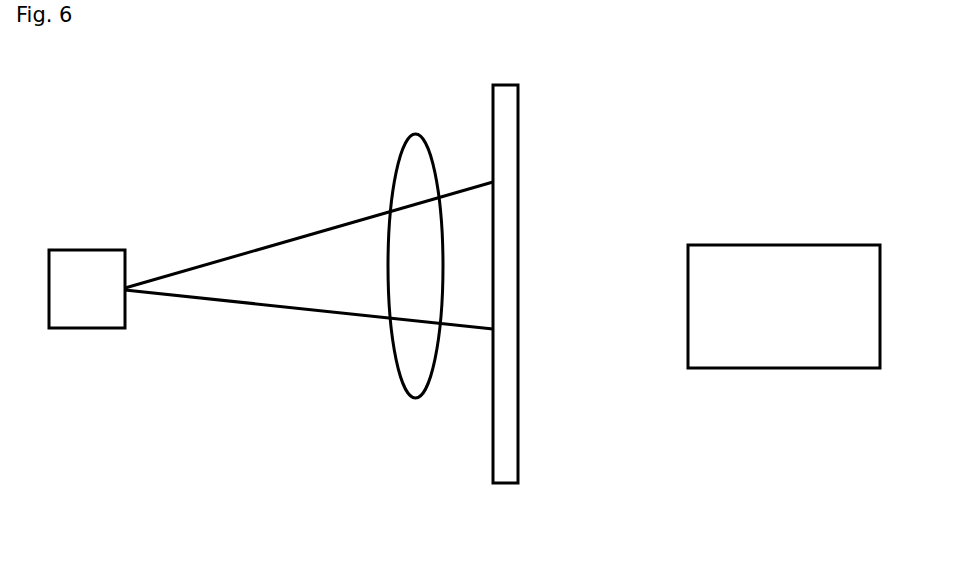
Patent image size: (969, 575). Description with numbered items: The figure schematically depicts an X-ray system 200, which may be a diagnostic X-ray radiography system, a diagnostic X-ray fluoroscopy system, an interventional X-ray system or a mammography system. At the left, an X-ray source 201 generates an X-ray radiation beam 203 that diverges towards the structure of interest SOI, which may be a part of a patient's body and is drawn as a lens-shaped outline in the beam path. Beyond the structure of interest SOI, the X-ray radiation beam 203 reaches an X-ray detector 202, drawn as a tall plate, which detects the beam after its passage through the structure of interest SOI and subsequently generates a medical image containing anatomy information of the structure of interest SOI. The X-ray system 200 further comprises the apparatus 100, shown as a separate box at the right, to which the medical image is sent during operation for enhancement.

The X-ray system 200 is at (205, 131).
The X-ray source 201 is at (95, 329).
The X-ray radiation beam 203 is at (270, 308).
The structure of interest SOI is at (415, 397).
The X-ray detector 202 is at (515, 484).
The apparatus 100 is at (797, 370).